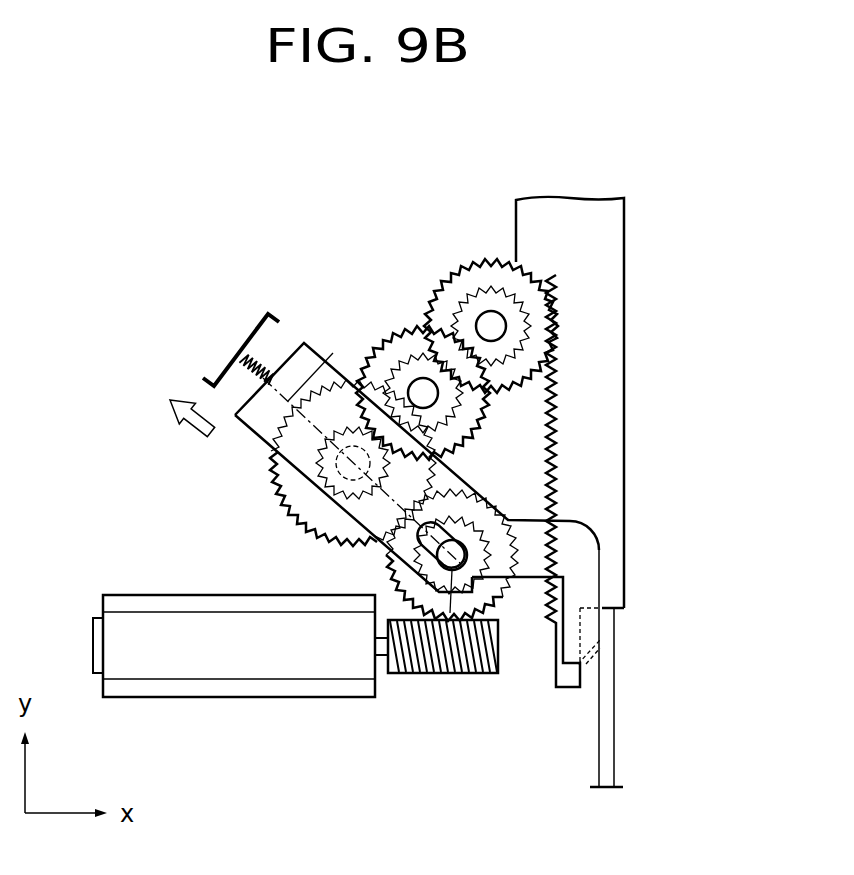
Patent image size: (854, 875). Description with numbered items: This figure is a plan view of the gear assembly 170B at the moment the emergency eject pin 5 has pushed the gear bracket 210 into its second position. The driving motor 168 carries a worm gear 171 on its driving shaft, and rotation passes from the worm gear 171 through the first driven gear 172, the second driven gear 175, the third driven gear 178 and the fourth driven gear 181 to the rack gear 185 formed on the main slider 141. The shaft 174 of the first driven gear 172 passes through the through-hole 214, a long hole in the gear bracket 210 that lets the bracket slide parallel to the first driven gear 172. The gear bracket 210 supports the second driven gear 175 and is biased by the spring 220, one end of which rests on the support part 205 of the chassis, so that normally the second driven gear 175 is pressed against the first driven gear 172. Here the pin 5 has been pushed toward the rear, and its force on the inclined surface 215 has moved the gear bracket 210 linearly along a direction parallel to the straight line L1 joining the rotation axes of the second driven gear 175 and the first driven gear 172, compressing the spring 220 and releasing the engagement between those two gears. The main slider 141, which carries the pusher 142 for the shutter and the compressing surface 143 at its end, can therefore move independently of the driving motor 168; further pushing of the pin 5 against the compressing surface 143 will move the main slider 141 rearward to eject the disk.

The gear assembly 170B is at (190, 262).
The fourth driven gear 181 is at (440, 265).
The third driven gear 178 is at (383, 329).
The support part 205 is at (218, 372).
The spring 220 is at (274, 348).
The straight line L1 is at (361, 446).
The gear bracket 210 is at (263, 425).
The second driven gear 175 is at (276, 519).
The first driven gear 172 is at (384, 578).
The rack gear 185 is at (546, 452).
The through-hole 214 is at (462, 542).
The main slider 141 is at (620, 405).
The compressing surface 143 is at (626, 612).
The inclined surface 215 is at (590, 657).
The pin 5 is at (615, 745).
The pusher 142 is at (560, 688).
The driving motor 168 is at (263, 697).
The worm gear 171 is at (400, 673).
The shaft 174 is at (465, 673).